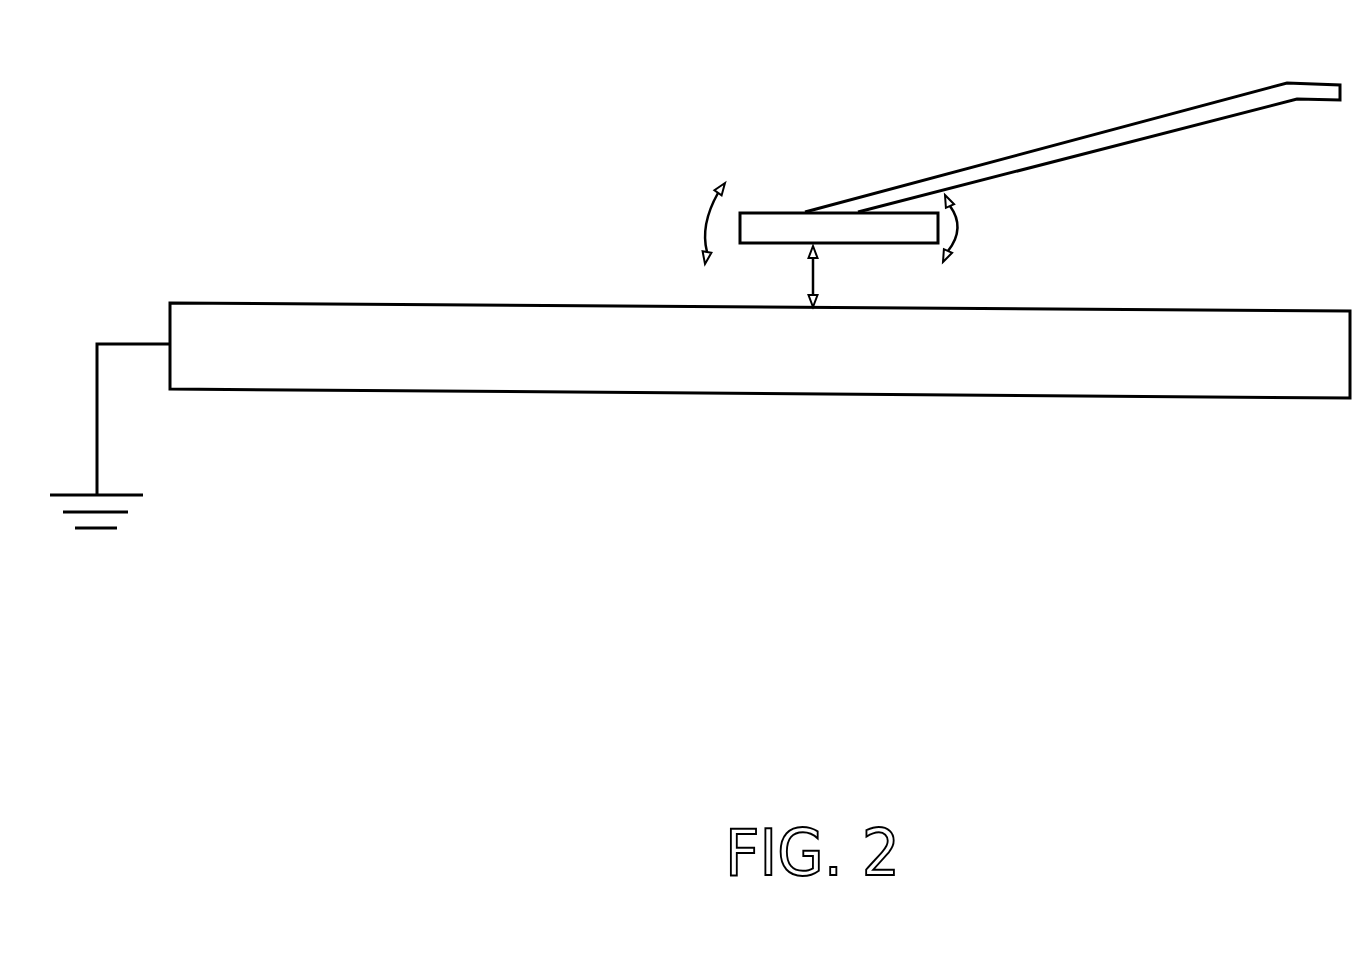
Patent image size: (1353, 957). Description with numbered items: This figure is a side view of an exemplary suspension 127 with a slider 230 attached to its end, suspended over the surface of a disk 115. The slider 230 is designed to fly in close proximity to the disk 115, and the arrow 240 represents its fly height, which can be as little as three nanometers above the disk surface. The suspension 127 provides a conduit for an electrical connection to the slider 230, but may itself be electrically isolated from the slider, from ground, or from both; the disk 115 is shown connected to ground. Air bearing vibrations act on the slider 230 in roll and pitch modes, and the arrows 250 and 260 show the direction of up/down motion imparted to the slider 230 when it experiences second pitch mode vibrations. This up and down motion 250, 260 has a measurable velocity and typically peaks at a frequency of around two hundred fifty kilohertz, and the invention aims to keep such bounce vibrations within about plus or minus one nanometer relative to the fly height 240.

The disk 115 is at (362, 303).
The suspension 127 is at (1018, 154).
The slider 230 is at (785, 212).
The fly height 240 is at (813, 278).
The up/down motion 250 is at (705, 220).
The up/down motion 260 is at (958, 222).